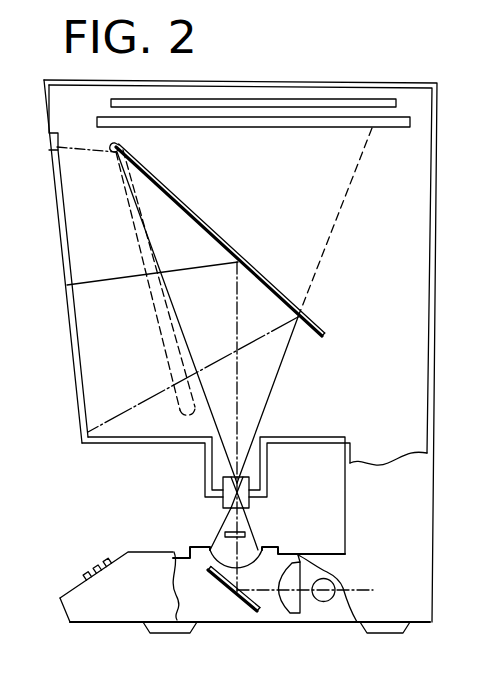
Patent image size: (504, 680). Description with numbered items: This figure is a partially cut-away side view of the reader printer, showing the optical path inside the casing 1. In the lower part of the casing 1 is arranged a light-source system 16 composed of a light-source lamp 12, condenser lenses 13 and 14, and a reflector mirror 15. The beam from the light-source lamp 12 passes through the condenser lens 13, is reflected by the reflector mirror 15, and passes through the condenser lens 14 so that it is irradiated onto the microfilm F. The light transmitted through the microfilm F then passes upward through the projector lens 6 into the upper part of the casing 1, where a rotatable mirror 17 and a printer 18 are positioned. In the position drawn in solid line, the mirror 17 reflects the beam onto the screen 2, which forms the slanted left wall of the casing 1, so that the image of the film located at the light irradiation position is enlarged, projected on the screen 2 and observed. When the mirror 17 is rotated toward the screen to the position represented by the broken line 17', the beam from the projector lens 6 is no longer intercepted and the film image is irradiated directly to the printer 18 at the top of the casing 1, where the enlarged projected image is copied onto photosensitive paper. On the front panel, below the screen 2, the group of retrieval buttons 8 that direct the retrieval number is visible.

The casing 1 is at (433, 304).
The screen 2 is at (75, 350).
The projector lens 6 is at (250, 503).
The microfilm F is at (246, 535).
The retrieval buttons 8 is at (92, 563).
The light-source lamp 12 is at (323, 602).
The condenser lens 13 is at (288, 598).
The condenser lens 14 is at (223, 555).
The reflector mirror 15 is at (247, 605).
The light-source system 16 is at (213, 607).
The rotatable mirror 17 is at (217, 239).
The mirror position (broken line) 17' is at (136, 282).
The printer 18 is at (352, 98).